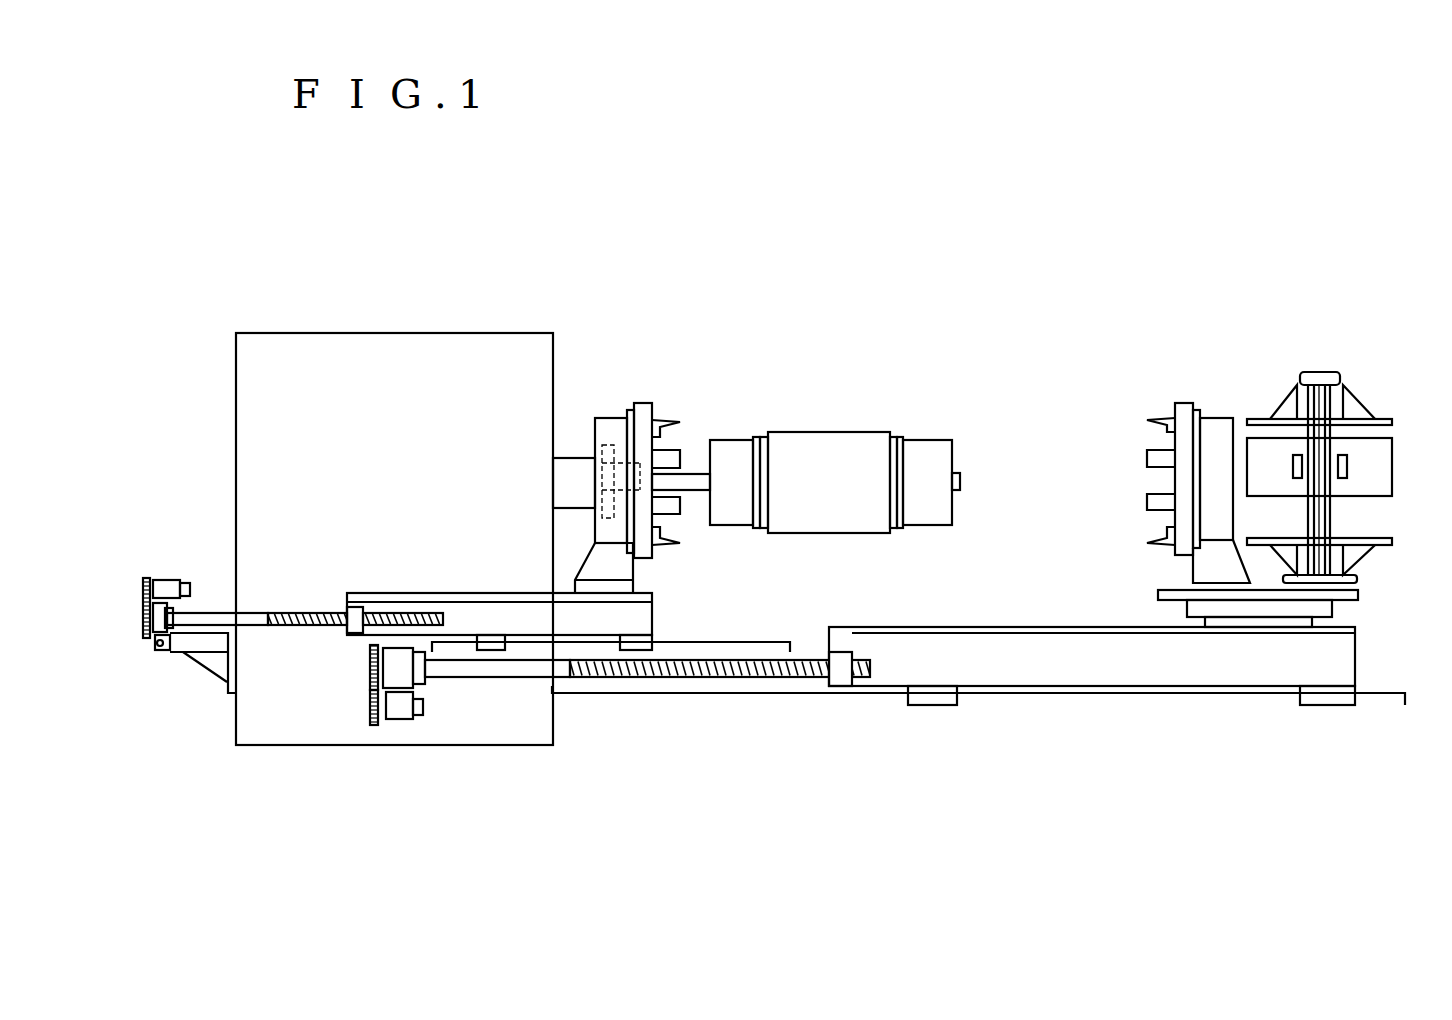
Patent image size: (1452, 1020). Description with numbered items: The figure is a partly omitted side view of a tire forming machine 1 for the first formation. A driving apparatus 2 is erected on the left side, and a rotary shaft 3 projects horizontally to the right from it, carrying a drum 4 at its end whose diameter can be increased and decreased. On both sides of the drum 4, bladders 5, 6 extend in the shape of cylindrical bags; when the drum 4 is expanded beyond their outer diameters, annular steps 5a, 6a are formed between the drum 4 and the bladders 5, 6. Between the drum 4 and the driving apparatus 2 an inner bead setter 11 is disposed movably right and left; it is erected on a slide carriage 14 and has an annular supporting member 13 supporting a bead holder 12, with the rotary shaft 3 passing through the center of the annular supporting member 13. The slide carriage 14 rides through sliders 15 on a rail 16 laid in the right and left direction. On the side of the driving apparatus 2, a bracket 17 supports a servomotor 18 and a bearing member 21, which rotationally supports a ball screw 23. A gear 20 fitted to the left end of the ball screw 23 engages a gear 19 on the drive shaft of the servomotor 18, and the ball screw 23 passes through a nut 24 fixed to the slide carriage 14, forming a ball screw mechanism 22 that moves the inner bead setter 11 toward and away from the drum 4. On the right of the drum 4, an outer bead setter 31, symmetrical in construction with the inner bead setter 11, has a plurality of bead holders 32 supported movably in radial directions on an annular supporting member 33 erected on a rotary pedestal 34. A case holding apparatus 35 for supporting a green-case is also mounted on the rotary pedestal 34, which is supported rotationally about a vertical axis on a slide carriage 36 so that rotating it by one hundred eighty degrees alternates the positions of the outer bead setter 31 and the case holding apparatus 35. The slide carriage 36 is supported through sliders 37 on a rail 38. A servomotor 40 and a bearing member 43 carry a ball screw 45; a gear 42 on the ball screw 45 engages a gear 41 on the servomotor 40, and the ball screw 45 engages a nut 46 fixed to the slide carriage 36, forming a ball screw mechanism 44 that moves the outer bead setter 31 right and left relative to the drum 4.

The driving apparatus 1 is at (892, 258).
The driving apparatus 2 is at (393, 333).
The rotary shaft 3 is at (698, 474).
The drum 4 is at (832, 432).
The bladder 5 is at (738, 525).
The annular step 5a is at (759, 436).
The bladder 6 is at (930, 525).
The annular step 6a is at (896, 436).
The inner bead setter 11 is at (632, 429).
The bead holder 12 is at (668, 420).
The annular supporting member 13 is at (643, 403).
The slide carriage 14 is at (520, 593).
The sliders 15 is at (487, 635).
The rail 16 is at (770, 642).
The bracket 17 is at (197, 665).
The servomotor 18 is at (170, 580).
The gear 19 is at (145, 578).
The gear 20 is at (152, 640).
The bearing member 21 is at (160, 652).
The ball screw mechanism 22 is at (305, 553).
The ball screw 23 is at (287, 613).
The nut 24 is at (355, 607).
The outer bead setter 31 is at (1169, 434).
The bead holders 32 is at (1158, 418).
The annular supporting member 33 is at (1180, 403).
The rotary pedestal 34 is at (1358, 595).
The case holding apparatus 35 is at (1325, 364).
The slide carriage 36 is at (1050, 627).
The sliders 37 is at (928, 705).
The rail 38 is at (1380, 693).
The servomotor 40 is at (397, 719).
The gear 41 is at (373, 725).
The gear 42 is at (368, 655).
The bearing member 43 is at (400, 668).
The ball screw mechanism 44 is at (647, 735).
The ball screw 45 is at (720, 677).
The nut 46 is at (837, 709).